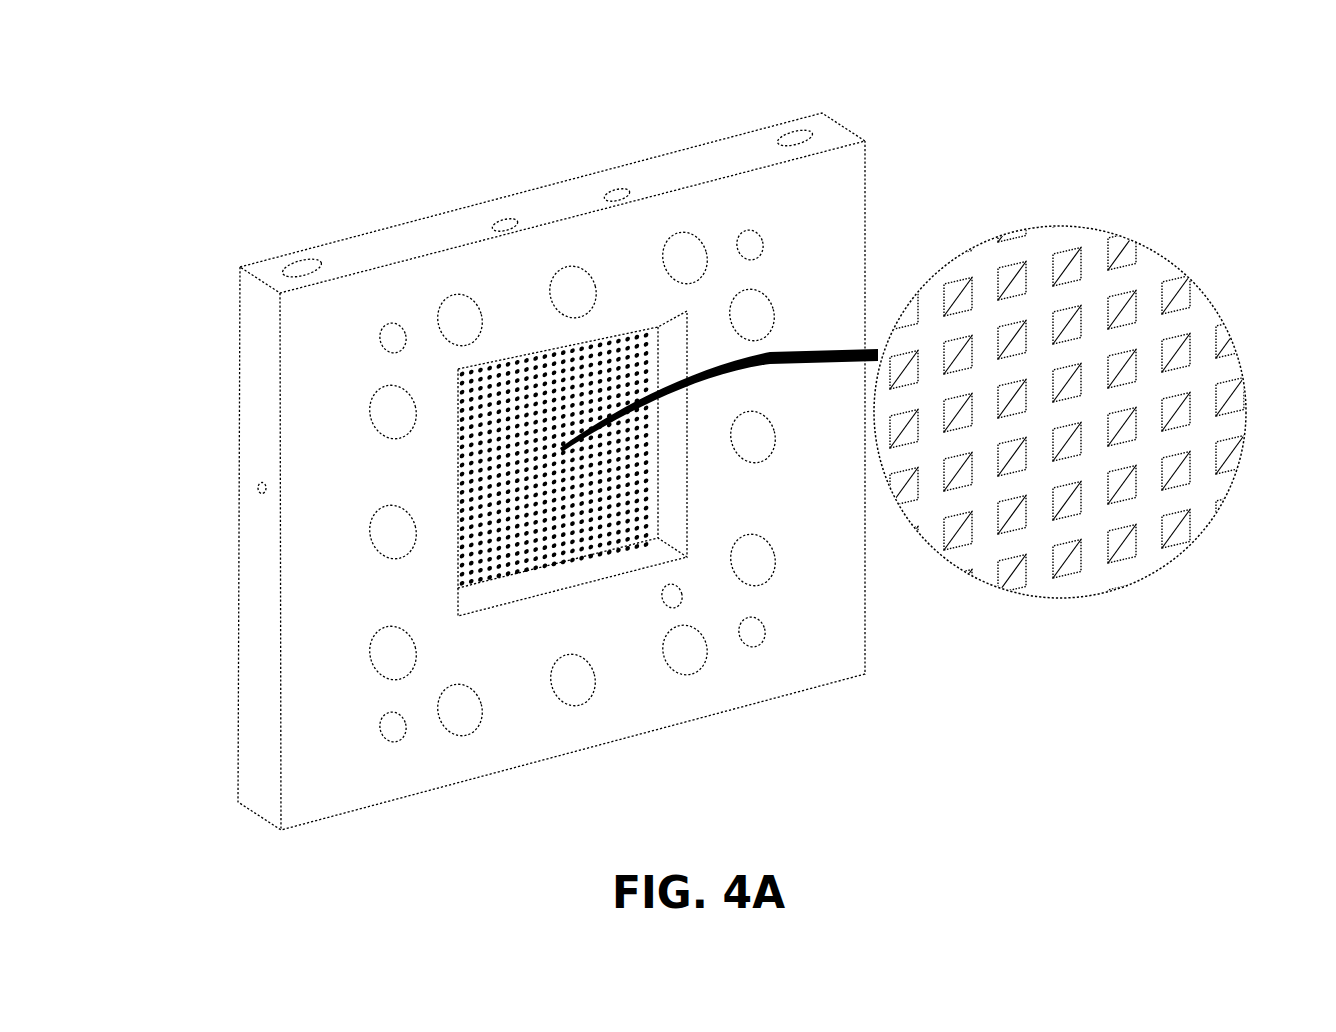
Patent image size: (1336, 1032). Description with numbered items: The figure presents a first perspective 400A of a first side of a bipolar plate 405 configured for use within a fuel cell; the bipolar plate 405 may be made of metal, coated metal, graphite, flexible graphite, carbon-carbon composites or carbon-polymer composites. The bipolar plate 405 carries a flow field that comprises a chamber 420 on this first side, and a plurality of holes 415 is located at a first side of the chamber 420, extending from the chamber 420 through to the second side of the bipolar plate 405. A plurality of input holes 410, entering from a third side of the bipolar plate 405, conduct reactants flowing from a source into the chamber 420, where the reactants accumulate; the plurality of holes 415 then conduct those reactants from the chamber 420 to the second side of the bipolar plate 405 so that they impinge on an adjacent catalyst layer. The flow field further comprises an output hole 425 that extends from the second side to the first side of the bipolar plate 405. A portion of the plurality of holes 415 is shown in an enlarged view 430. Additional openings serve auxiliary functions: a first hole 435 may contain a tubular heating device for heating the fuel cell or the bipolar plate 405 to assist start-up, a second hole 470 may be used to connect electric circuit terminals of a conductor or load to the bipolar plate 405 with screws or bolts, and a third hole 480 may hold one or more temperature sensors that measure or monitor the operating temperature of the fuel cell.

The first perspective 400A is at (283, 78).
The bipolar plate 405 is at (238, 315).
The plurality of input holes 410 is at (511, 214).
The plurality of holes 415 is at (639, 343).
The chamber 420 is at (688, 428).
The output hole 425 is at (677, 584).
The enlarged view 430 is at (1000, 236).
The first hole 435 is at (804, 131).
The second hole 470 is at (311, 258).
The third hole 480 is at (261, 483).